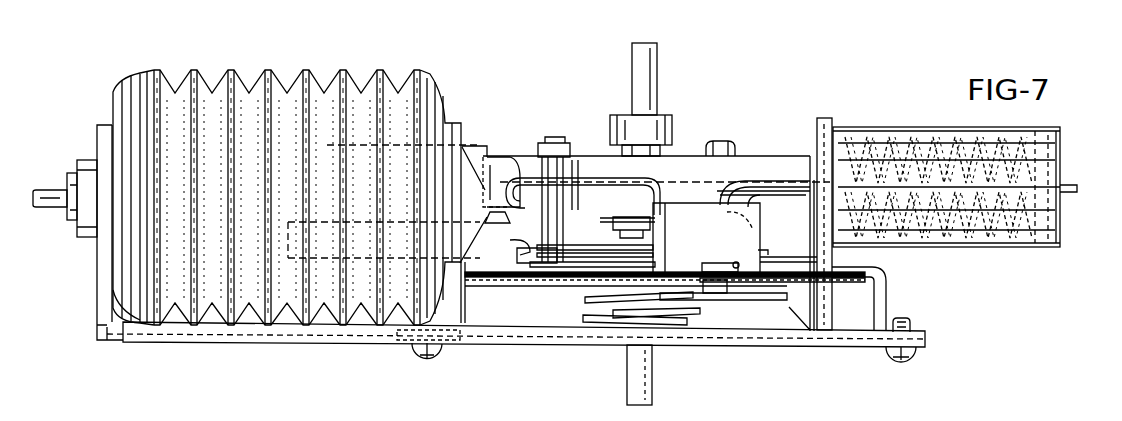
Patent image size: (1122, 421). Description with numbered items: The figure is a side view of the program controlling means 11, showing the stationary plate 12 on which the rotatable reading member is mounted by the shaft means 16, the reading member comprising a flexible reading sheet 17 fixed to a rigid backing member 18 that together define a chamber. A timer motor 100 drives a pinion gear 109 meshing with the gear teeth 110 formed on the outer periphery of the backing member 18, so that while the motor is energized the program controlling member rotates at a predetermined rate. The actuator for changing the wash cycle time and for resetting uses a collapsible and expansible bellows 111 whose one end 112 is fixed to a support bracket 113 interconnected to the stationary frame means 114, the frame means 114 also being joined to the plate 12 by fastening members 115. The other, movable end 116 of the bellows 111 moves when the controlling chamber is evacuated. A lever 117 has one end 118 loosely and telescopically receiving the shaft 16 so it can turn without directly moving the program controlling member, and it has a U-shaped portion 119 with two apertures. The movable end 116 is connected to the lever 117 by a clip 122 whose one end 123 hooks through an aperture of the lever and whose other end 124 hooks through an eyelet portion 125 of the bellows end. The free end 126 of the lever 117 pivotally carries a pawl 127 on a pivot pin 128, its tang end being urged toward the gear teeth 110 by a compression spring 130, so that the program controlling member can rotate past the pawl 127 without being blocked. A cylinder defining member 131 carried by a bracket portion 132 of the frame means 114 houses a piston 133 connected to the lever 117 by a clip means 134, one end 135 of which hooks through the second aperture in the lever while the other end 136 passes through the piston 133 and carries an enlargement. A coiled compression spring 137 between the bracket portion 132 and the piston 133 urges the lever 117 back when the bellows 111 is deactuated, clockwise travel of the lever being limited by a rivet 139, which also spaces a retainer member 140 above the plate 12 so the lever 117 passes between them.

The program controlling means 11 is at (765, 127).
The stationary plate 12 is at (748, 167).
The shaft means 16 is at (659, 387).
The flexible reading sheet 17 is at (495, 279).
The rigid backing member 18 is at (528, 284).
The timer motor 100 is at (483, 146).
The pinion gear 109 is at (399, 330).
The gear teeth 110 is at (566, 282).
The bellows 111 is at (351, 86).
The one end of the bellows 112 is at (124, 111).
The support bracket 113 is at (110, 127).
The stationary frame means 114 is at (350, 343).
The fastening members 115 is at (905, 318).
The movable end of the bellows 116 is at (459, 123).
The lever 117 is at (700, 246).
The one end of the lever 118 is at (600, 251).
The U-shaped portion 119 is at (674, 200).
The clip 122 is at (578, 176).
The one end of the clip 123 is at (665, 190).
The other end of the clip 124 is at (557, 194).
The eyelet portion 125 is at (499, 200).
The free end of the lever 126 is at (758, 284).
The pawl 127 is at (795, 290).
The pivot pin 128 is at (721, 262).
The compression spring 130 is at (745, 258).
The cylinder defining member 131 is at (915, 136).
The bracket portion 132 is at (832, 118).
The piston 133 is at (1047, 141).
The clip means 134 is at (792, 180).
The one end of the clip means 135 is at (749, 193).
The other end of the clip means 136 is at (1038, 254).
The coiled compression spring 137 is at (996, 249).
The rivet 139 is at (518, 242).
The retainer member 140 is at (769, 252).